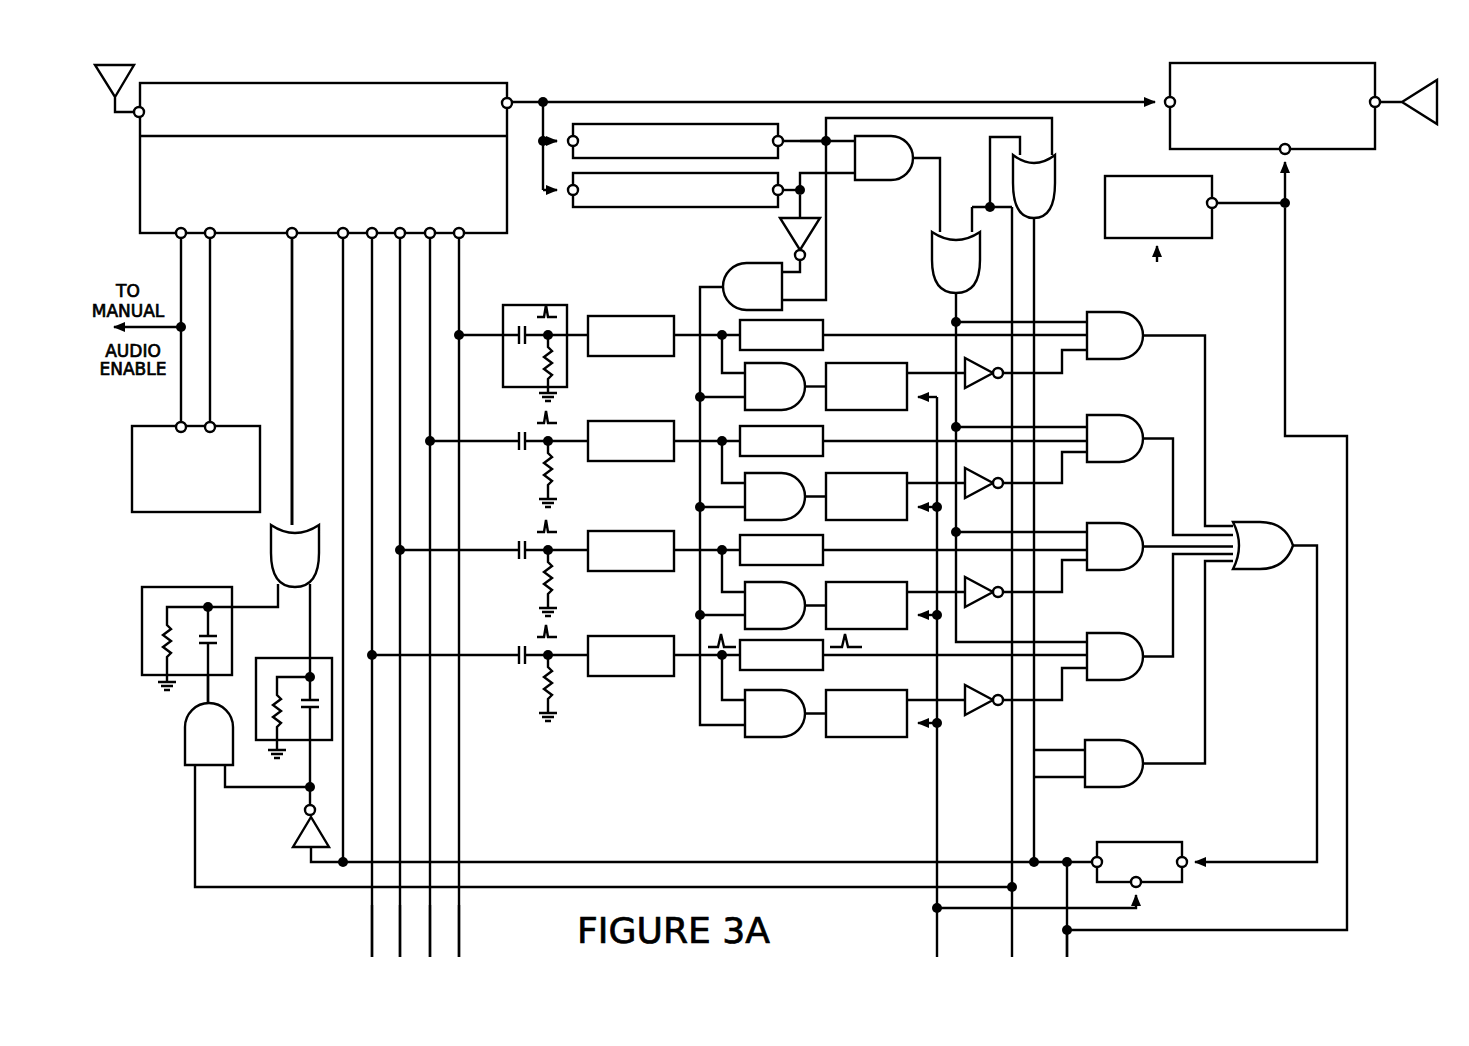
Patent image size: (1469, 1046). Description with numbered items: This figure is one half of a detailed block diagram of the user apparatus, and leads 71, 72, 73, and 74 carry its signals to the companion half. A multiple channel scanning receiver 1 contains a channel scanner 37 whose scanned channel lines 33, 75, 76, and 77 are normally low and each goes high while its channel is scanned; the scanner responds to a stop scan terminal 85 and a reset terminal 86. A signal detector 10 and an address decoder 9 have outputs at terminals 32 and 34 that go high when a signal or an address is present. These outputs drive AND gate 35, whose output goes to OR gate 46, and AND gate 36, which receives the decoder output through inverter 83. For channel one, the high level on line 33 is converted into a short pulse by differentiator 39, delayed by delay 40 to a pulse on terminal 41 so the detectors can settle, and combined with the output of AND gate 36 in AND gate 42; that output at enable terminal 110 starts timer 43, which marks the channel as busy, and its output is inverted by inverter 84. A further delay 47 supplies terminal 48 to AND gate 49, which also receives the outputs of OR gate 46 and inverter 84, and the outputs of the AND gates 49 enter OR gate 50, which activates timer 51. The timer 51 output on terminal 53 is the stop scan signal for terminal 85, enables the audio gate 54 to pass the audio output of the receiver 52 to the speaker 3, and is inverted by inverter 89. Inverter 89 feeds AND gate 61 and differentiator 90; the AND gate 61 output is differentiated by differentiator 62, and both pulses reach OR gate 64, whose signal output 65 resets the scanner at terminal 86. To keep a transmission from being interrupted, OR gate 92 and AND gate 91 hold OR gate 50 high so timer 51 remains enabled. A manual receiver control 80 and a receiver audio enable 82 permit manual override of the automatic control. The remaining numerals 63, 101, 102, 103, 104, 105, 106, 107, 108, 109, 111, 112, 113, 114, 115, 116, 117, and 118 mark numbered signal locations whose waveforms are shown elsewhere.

The multiple channel scanning receiver 1 is at (138, 175).
The speaker 3 is at (1427, 112).
The address detector 9 is at (680, 207).
The signal detector 10 is at (742, 124).
The output terminal 32 is at (780, 136).
The scanned channel line 33 is at (460, 238).
The output terminal 34 is at (795, 195).
The AND gate 35 is at (913, 150).
The AND gate 36 is at (723, 280).
The channel scanner 37 is at (497, 217).
The differentiator 39 is at (545, 305).
The delay 40 is at (618, 317).
The output terminal 41 is at (678, 342).
The AND gate 42 is at (743, 398).
The timer 43 is at (847, 410).
The OR gate 46 is at (932, 248).
The delay 47 is at (823, 320).
The output terminal 48 is at (826, 333).
The AND gate 49 is at (1140, 355).
The OR gate 50 is at (1263, 521).
The timer 51 is at (1175, 882).
The receiver 52 is at (510, 88).
The output terminal 53 is at (1093, 858).
The audio gate 54 is at (1170, 138).
The AND gate 61 is at (185, 740).
The differentiator 62 is at (162, 587).
The OR gate output line 63 is at (281, 592).
The OR gate 64 is at (278, 533).
The signal output 65 is at (290, 528).
The interconnecting lead 71 is at (459, 940).
The interconnecting lead 72 is at (937, 930).
The interconnecting lead 73 is at (1012, 940).
The interconnecting lead 74 is at (1067, 944).
The scanned channel line 75 is at (430, 238).
The scanned channel line 76 is at (400, 238).
The scanned channel line 77 is at (372, 238).
The manual receiver control 80 is at (207, 512).
The receiver audio enable 82 is at (1212, 228).
The inverter 83 is at (782, 236).
The inverter 84 is at (978, 388).
The stop line 85 is at (343, 238).
The reset line 86 is at (293, 238).
The inverter 89 is at (295, 818).
The differentiator 90 is at (287, 657).
The AND gate 91 is at (1142, 742).
The OR gate 92 is at (1058, 168).
The signal detector output line 101 is at (800, 141).
The address decoder output line 102 is at (790, 194).
The AND gate output line 103 is at (940, 215).
The AND gate input line 104 is at (699, 295).
The differentiator circuit 105 is at (503, 335).
The delay circuit 106 is at (575, 340).
The delay output line 107 is at (718, 334).
The delay output line 108 is at (872, 334).
The OR gate output line 109 is at (958, 322).
The enable terminal 110 is at (815, 385).
The timer reset input line 111 is at (907, 383).
The AND gate output line 112 is at (1190, 333).
The OR gate output line 113 is at (1294, 546).
The junction 114 is at (990, 207).
The timer input line 115 is at (1068, 867).
The reset line 116 is at (294, 465).
The OR gate output line 117 is at (308, 595).
The capacitor output line 118 is at (203, 690).